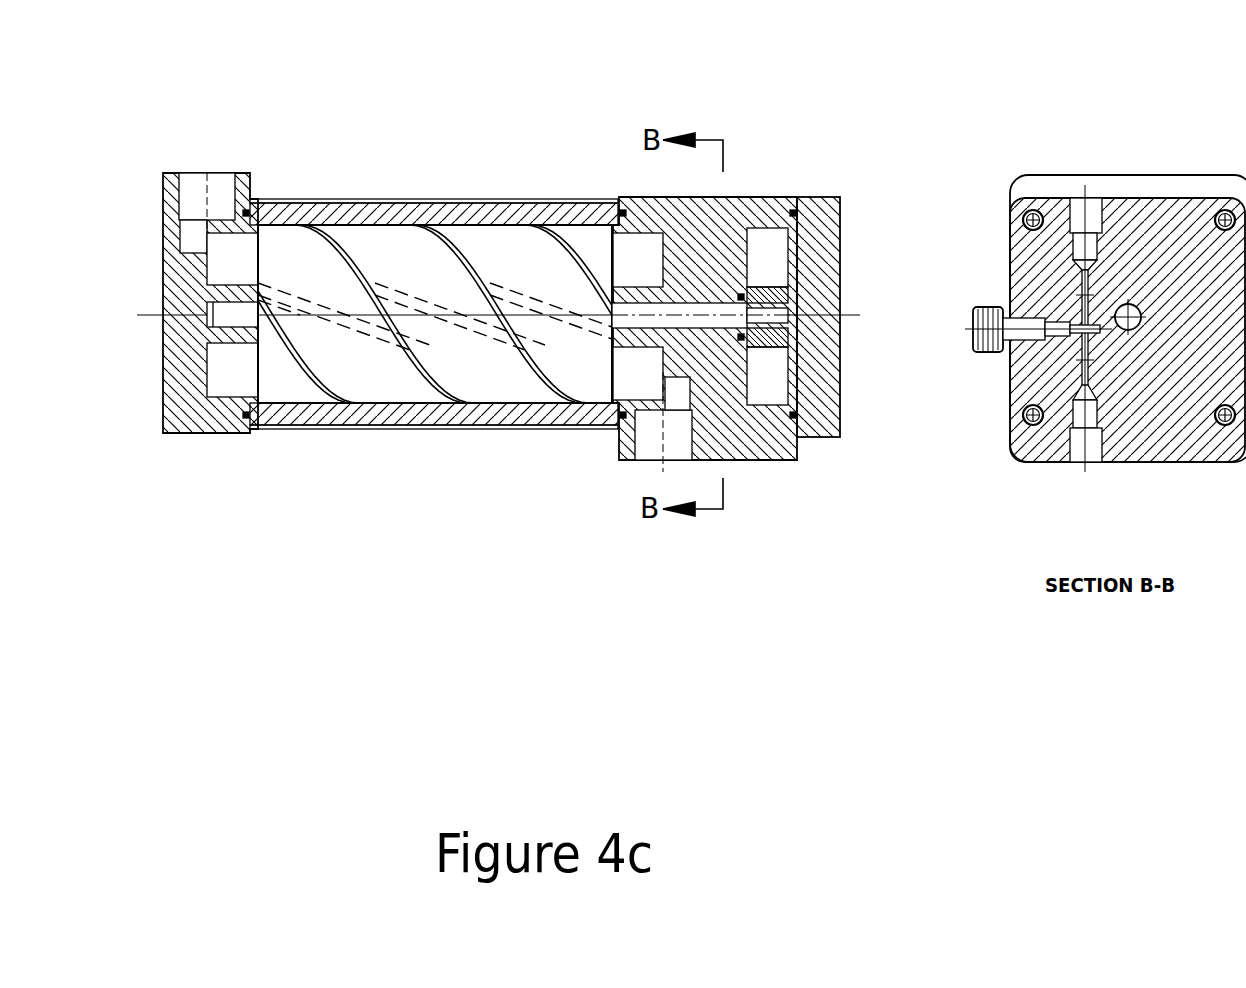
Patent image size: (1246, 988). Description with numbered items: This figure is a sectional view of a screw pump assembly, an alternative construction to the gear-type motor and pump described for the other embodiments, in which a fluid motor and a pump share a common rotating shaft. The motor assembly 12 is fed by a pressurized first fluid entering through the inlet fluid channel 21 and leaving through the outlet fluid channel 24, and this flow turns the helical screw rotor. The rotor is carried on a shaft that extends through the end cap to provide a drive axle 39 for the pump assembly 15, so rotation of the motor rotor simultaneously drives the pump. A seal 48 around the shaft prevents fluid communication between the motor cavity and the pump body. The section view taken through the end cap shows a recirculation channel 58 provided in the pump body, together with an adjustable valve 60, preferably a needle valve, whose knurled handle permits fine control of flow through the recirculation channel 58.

The gear motor assembly 12 is at (418, 152).
The gear pump assembly 15 is at (755, 120).
The inlet fluid channel 21 is at (210, 173).
The outlet fluid channel 24 is at (627, 465).
The drive axle 39 is at (697, 305).
The seal 48 is at (743, 337).
The recirculation channel 58 is at (1093, 273).
The adjustable valve 60 is at (990, 305).